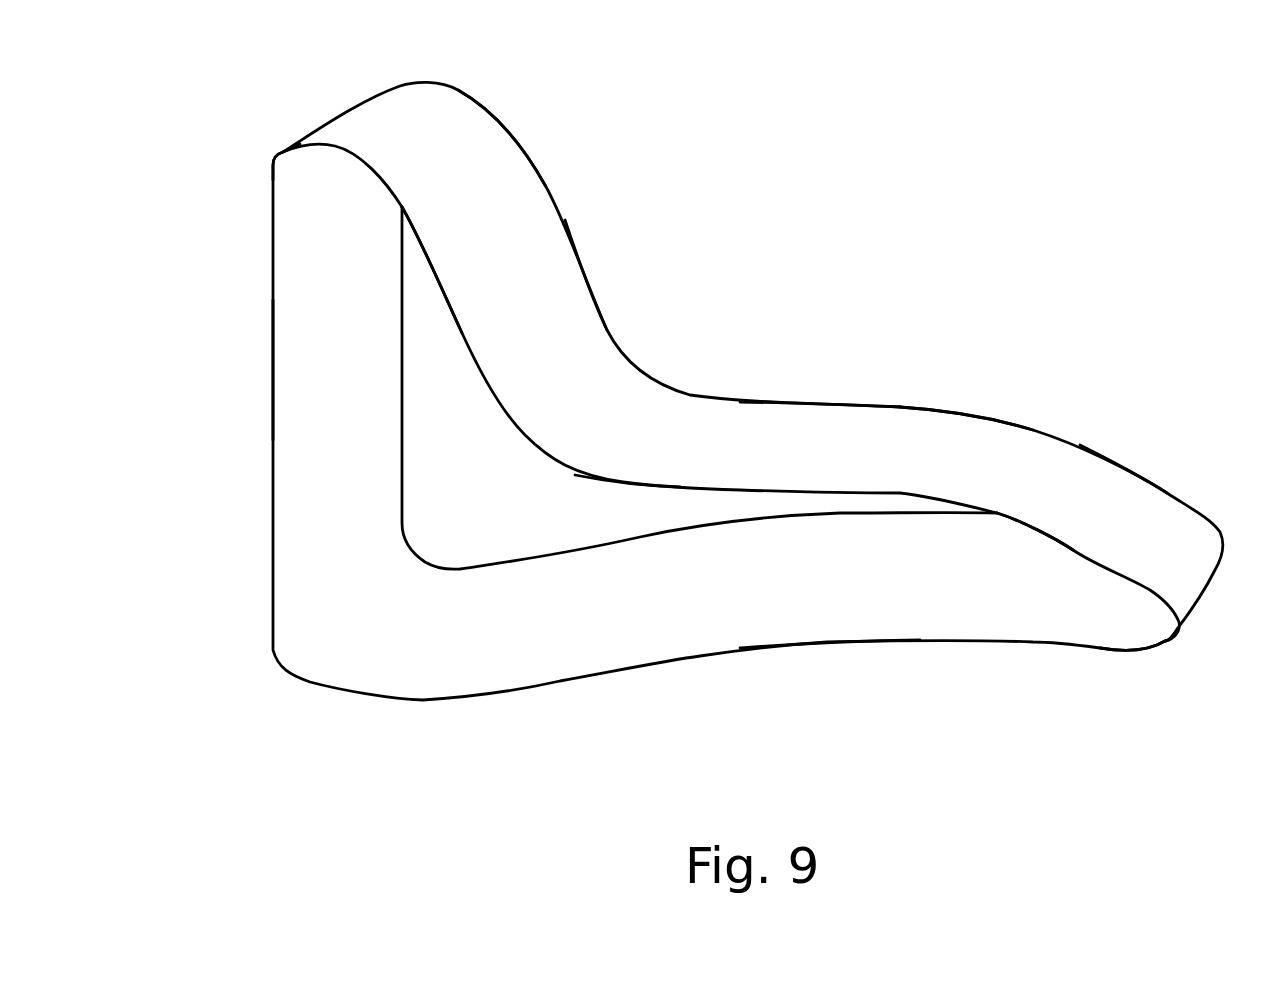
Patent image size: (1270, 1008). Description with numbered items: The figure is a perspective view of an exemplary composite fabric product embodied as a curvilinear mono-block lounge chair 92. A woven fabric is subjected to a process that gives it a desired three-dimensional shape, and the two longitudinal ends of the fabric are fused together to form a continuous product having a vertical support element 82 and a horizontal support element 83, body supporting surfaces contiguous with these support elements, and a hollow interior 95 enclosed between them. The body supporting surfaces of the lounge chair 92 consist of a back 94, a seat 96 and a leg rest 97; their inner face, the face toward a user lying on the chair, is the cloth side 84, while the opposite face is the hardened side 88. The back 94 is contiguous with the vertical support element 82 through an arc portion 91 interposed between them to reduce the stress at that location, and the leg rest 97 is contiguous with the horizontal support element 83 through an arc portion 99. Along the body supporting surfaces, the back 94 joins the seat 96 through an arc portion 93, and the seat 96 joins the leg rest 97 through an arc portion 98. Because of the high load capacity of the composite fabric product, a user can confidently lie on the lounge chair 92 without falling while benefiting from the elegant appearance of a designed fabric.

The vertical support element 82 is at (272, 370).
The horizontal support element 83 is at (827, 643).
The cloth side 84 is at (588, 290).
The hardened side 88 is at (452, 310).
The arc portion 91 is at (273, 160).
The lounge chair 92 is at (965, 412).
The arc portion 93 is at (627, 481).
The back 94 is at (505, 202).
The hollow interior 95 is at (476, 635).
The seat 96 is at (807, 435).
The leg rest 97 is at (1110, 500).
The arc portion 98 is at (1040, 532).
The arc portion 99 is at (1168, 641).